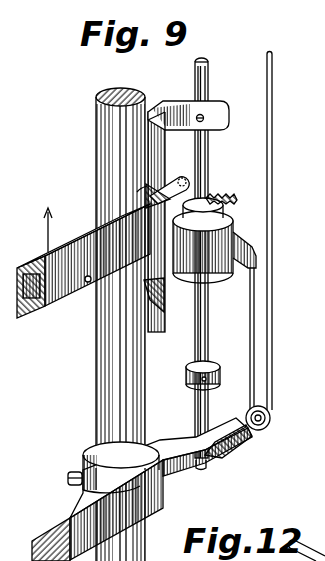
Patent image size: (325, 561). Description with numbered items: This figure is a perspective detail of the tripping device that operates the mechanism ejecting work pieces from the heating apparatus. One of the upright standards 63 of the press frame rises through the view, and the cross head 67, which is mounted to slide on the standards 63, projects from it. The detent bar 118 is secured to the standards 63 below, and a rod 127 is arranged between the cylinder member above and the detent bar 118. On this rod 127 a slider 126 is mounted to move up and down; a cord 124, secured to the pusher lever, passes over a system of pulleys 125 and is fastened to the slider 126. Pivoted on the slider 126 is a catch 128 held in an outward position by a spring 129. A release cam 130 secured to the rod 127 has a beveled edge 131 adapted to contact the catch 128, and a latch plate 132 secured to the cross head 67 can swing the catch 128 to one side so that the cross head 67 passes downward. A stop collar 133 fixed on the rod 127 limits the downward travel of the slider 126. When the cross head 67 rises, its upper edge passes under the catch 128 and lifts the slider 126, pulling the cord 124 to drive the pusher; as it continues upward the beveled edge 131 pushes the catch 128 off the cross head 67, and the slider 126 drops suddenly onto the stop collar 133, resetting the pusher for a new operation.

The standard 63 is at (120, 324).
The cross head 67 is at (83, 261).
The detent bar 118 is at (142, 489).
The cord 124 is at (254, 343).
The pulley 125 is at (270, 423).
The slider 126 is at (238, 230).
The rod 127 is at (196, 343).
The catch 128 is at (92, 230).
The spring 129 is at (222, 194).
The release cam 130 is at (162, 146).
The beveled edge 131 is at (162, 188).
The latch plate 132 is at (150, 300).
The stop collar 133 is at (192, 376).